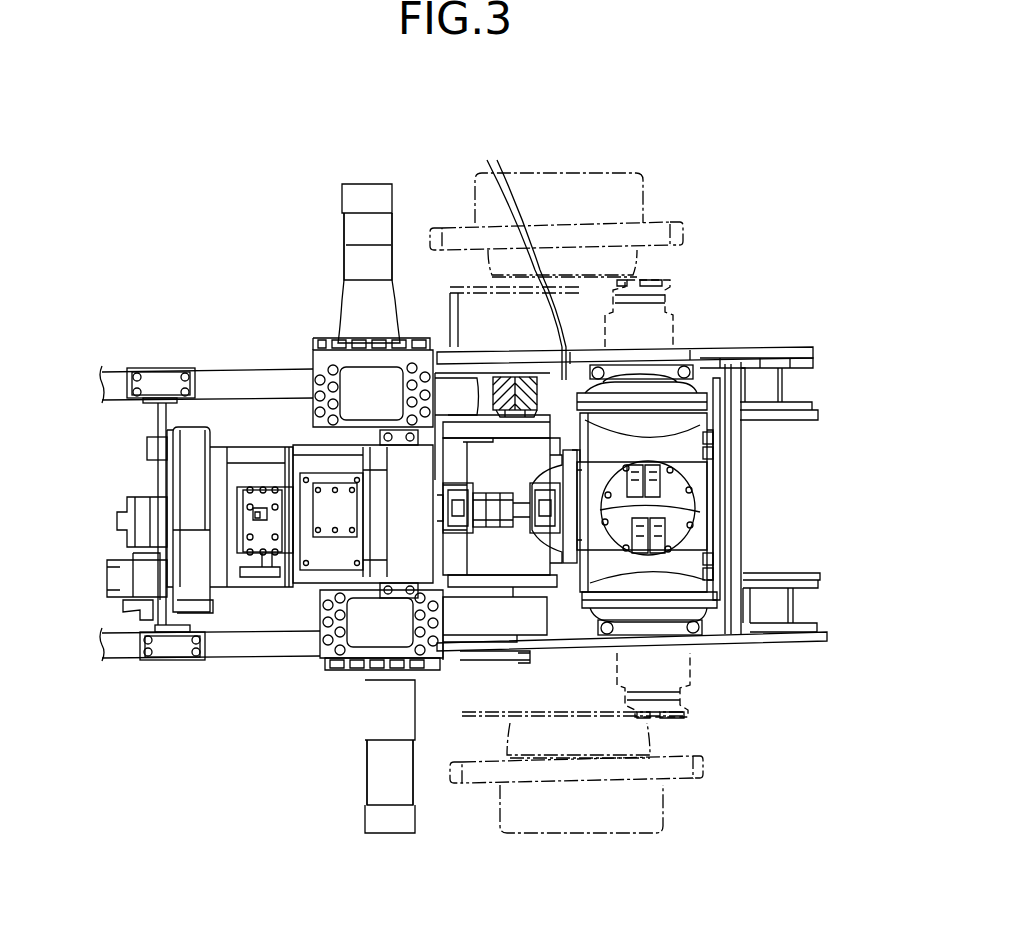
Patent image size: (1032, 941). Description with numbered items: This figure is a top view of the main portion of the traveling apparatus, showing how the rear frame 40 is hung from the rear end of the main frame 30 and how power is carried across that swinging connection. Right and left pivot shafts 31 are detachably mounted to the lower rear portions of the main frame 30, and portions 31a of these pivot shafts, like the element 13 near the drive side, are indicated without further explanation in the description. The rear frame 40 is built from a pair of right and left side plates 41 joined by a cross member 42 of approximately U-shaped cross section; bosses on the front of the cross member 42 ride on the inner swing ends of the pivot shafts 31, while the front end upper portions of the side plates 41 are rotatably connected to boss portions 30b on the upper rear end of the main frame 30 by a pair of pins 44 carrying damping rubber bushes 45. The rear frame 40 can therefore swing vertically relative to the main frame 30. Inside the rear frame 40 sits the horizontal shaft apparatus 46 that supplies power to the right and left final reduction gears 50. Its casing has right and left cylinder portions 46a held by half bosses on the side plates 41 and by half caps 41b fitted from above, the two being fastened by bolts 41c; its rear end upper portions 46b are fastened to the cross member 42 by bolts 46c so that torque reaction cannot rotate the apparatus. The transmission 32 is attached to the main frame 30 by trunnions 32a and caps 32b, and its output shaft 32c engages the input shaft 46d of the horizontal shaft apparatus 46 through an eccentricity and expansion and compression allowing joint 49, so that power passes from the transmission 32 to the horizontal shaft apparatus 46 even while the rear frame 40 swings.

The axle 13 is at (674, 232).
The main frame 30 is at (115, 368).
The boss portions 30b is at (492, 347).
The pivot shafts 31 is at (365, 183).
The column portion 31a is at (335, 312).
The transmission 32 is at (298, 442).
The trunnions 32a is at (390, 433).
The caps 32b is at (385, 420).
The output shaft 32c is at (317, 607).
The rear frame 40 is at (760, 350).
The side plates 41 is at (731, 348).
The half caps 41b is at (683, 365).
The bolts 41c is at (692, 365).
The cross member 42 is at (792, 676).
The pins 44 is at (470, 375).
The damping rubber bushes 45 is at (493, 375).
The horizontal shaft apparatus 46 is at (702, 467).
The cylinder portions 46a is at (688, 365).
The rear end upper portions 46b is at (725, 430).
The bolts 46c is at (715, 452).
The input shaft 46d is at (700, 512).
The eccentricity and expansion and compression allowing joint 49 is at (515, 563).
The final reduction gears 50 is at (625, 172).